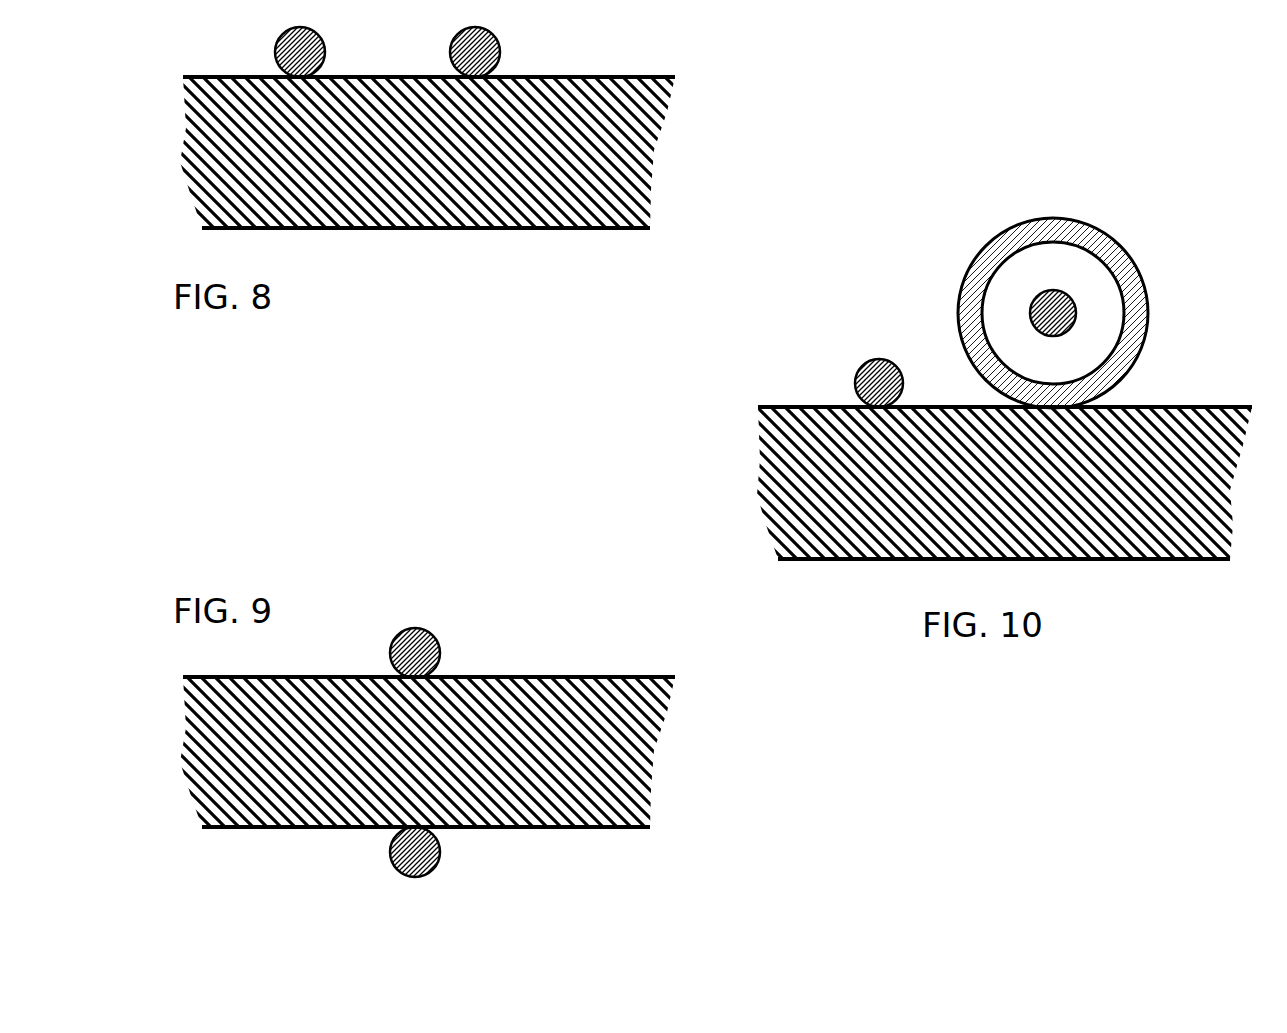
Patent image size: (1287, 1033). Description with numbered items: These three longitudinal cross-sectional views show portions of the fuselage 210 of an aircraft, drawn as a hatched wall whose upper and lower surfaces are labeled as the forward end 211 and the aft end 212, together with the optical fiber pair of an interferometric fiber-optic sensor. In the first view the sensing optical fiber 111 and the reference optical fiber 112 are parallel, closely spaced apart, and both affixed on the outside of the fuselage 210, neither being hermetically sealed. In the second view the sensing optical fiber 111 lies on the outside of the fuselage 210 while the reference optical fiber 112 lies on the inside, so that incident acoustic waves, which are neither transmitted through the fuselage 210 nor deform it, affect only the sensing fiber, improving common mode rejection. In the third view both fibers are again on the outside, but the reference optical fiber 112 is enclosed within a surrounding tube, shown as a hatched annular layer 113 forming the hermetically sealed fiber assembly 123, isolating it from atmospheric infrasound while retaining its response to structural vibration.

In FIG. 8, the sensing optical fiber 111 is at (277, 53).
In FIG. 9, the sensing optical fiber 111 is at (415, 628).
In FIG. 10, the sensing optical fiber 111 is at (872, 361).
In FIG. 8, the reference optical fiber 112 is at (452, 56).
In FIG. 9, the reference optical fiber 112 is at (390, 852).
In FIG. 10, the reference optical fiber 112 is at (1036, 295).
In FIG. 10, the coating layer 113 is at (1052, 218).
In FIG. 10, the coated composite particle 123 is at (1160, 292).
In FIG. 8, the fuselage 210 is at (690, 77).
In FIG. 9, the fuselage 210 is at (690, 677).
In FIG. 10, the fuselage 210 is at (738, 407).
In FIG. 8, the forward end 211 is at (618, 77).
In FIG. 9, the forward end 211 is at (618, 677).
In FIG. 10, the forward end 211 is at (1185, 407).
In FIG. 8, the aft end 212 is at (618, 229).
In FIG. 9, the aft end 212 is at (618, 829).
In FIG. 10, the aft end 212 is at (1185, 560).